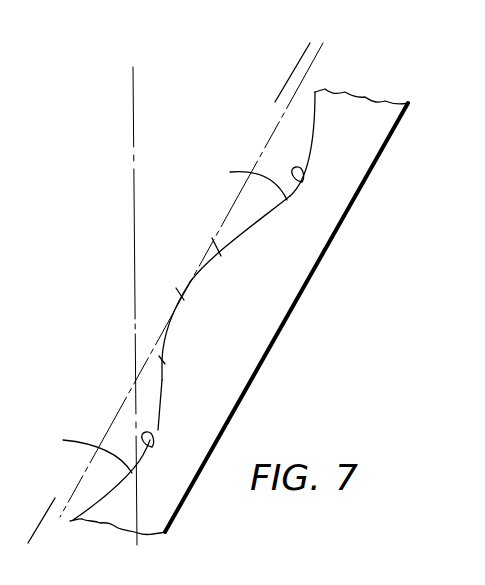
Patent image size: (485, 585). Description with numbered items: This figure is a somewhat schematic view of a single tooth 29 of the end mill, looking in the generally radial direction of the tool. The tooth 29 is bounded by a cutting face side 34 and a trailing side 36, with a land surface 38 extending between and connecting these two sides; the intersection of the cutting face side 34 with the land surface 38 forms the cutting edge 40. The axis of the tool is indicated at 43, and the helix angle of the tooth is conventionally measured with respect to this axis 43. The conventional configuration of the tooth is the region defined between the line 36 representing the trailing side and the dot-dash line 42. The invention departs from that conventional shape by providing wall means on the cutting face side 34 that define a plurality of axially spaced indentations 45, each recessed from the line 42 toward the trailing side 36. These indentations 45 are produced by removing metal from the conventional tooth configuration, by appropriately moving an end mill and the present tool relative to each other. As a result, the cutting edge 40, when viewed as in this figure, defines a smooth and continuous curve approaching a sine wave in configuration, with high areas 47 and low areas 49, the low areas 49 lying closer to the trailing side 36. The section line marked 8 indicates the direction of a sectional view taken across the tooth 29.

The section line 8- 8 is at (300, 55).
The tooth 29 is at (228, 377).
The cutting face side 34 is at (162, 360).
The trailing side 36 is at (282, 338).
The land surface 38 is at (288, 258).
The cutting edge 40 is at (215, 240).
The dot-dash line 42 is at (122, 398).
The axis of the tool 43 is at (132, 215).
The indentations 45 is at (218, 179).
The high areas 47 is at (180, 293).
The low areas 49 is at (302, 180).